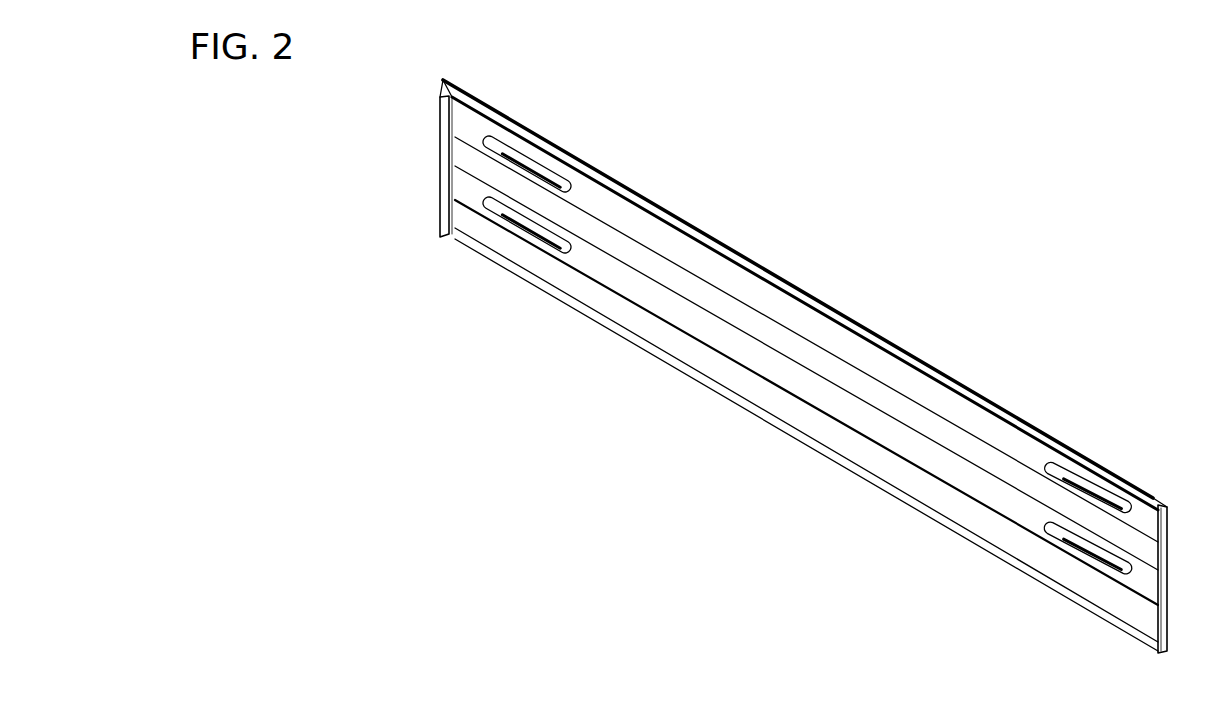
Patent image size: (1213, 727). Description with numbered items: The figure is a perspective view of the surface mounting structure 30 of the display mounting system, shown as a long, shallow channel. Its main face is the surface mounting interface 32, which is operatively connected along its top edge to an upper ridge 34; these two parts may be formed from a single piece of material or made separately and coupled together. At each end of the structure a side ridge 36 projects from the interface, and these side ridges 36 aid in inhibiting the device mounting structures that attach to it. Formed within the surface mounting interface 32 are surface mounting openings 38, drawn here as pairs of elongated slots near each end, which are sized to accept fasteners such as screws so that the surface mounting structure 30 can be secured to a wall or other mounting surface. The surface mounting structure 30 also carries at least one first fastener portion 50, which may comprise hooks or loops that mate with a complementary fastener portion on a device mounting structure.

The surface mounting structure 30 is at (894, 306).
The surface mounting interface 32 is at (612, 208).
The upper ridge 34 is at (673, 215).
The side ridge 36 is at (440, 120).
The surface mounting opening 38 is at (537, 228).
The first fastener portion 50 is at (1000, 461).